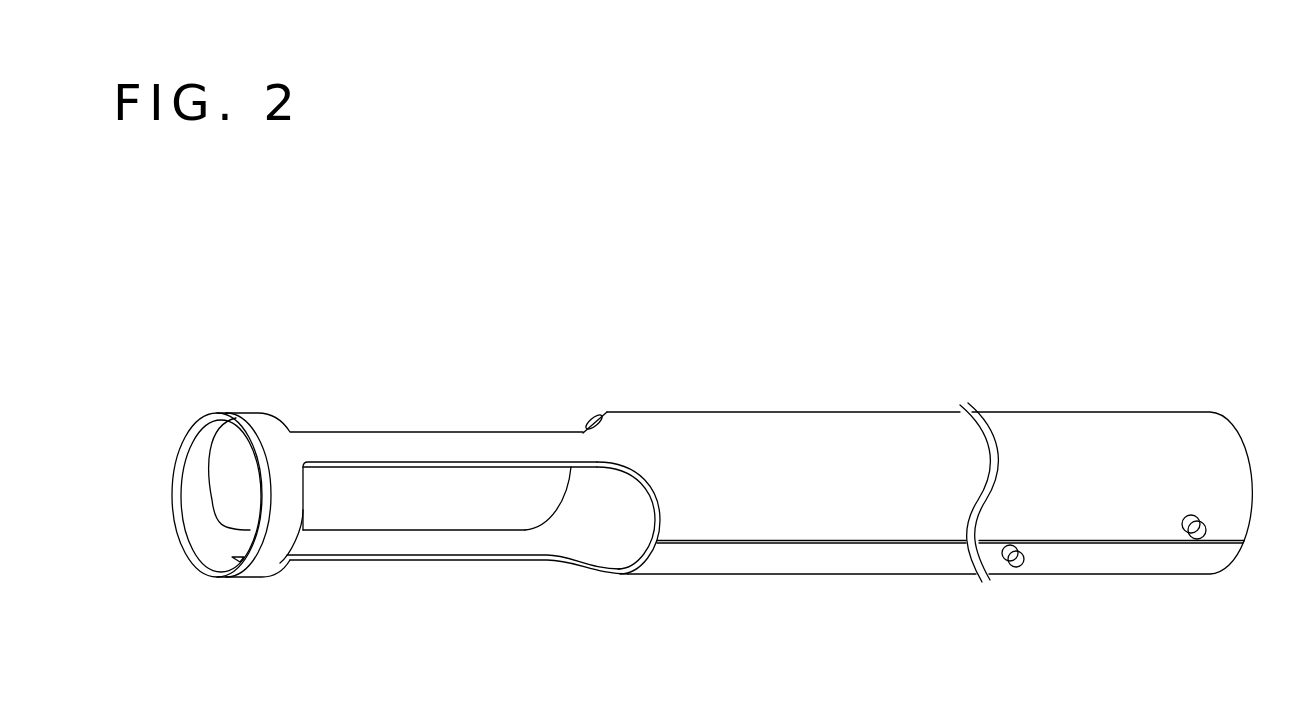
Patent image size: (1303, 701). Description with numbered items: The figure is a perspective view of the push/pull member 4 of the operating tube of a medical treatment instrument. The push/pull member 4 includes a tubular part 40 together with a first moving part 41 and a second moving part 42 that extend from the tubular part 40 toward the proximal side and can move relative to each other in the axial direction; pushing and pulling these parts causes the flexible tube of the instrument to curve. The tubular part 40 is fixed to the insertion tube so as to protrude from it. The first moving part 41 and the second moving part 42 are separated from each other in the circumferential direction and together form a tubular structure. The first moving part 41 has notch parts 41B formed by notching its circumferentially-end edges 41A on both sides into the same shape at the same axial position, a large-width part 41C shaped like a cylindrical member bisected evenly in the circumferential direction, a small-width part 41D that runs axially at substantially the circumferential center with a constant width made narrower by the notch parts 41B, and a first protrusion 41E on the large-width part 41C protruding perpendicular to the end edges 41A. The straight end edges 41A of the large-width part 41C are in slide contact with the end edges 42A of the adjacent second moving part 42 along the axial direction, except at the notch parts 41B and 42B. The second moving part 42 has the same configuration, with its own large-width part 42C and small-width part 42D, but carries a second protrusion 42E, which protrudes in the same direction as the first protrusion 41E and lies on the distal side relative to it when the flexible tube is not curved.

The push/pull member 4 is at (408, 300).
The tubular part 40 is at (253, 419).
The first moving part 41 is at (667, 410).
The circumferentially-end edge 41A is at (874, 543).
The notch part 41B is at (487, 469).
The large-width part 41C is at (794, 445).
The small-width part 41D is at (433, 444).
The first protrusion 41E is at (1198, 538).
The second moving part 42 is at (674, 577).
The end edge 42A is at (927, 540).
The notch part 42B is at (507, 563).
The large-width part 42C is at (792, 556).
The small-width part 42D is at (434, 553).
The second protrusion 42E is at (1015, 568).